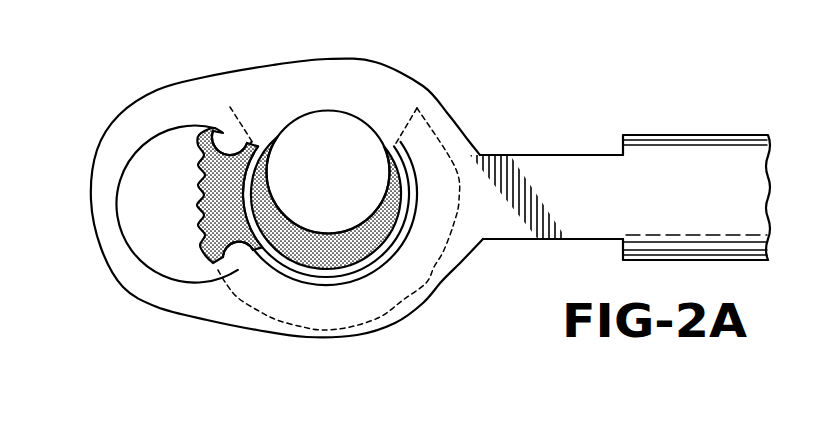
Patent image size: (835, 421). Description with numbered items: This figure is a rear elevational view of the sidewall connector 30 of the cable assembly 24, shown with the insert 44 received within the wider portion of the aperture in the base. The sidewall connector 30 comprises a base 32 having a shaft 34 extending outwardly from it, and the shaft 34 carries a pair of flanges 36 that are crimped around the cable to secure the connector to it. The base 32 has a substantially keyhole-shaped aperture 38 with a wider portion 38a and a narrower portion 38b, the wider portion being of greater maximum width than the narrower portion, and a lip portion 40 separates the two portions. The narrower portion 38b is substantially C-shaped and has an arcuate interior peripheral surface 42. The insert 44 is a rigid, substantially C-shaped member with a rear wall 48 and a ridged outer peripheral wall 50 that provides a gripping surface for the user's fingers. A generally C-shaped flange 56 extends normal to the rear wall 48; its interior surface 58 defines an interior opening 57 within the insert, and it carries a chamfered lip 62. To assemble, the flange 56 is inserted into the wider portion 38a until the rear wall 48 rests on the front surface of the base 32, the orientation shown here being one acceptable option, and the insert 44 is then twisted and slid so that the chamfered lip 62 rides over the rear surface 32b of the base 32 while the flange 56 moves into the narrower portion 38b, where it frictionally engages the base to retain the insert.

The cable assembly 24 is at (627, 79).
The sidewall connector 30 is at (452, 110).
The base 32 is at (378, 66).
The rear surface 32b is at (394, 89).
The shaft 34 is at (567, 183).
The flanges 36 is at (691, 135).
The aperture 38 is at (279, 113).
The wider portion 38a is at (350, 121).
The narrower portion 38b is at (160, 153).
The lip portion 40 is at (216, 132).
The arcuate interior peripheral surface 42 is at (124, 198).
The insert 44 is at (177, 250).
The rear wall 48 is at (213, 200).
The outer peripheral wall 50 is at (195, 168).
The flange 56 is at (302, 266).
The interior opening 57 is at (341, 231).
The interior surface 58 is at (288, 204).
The chamfered lip 62 is at (379, 259).